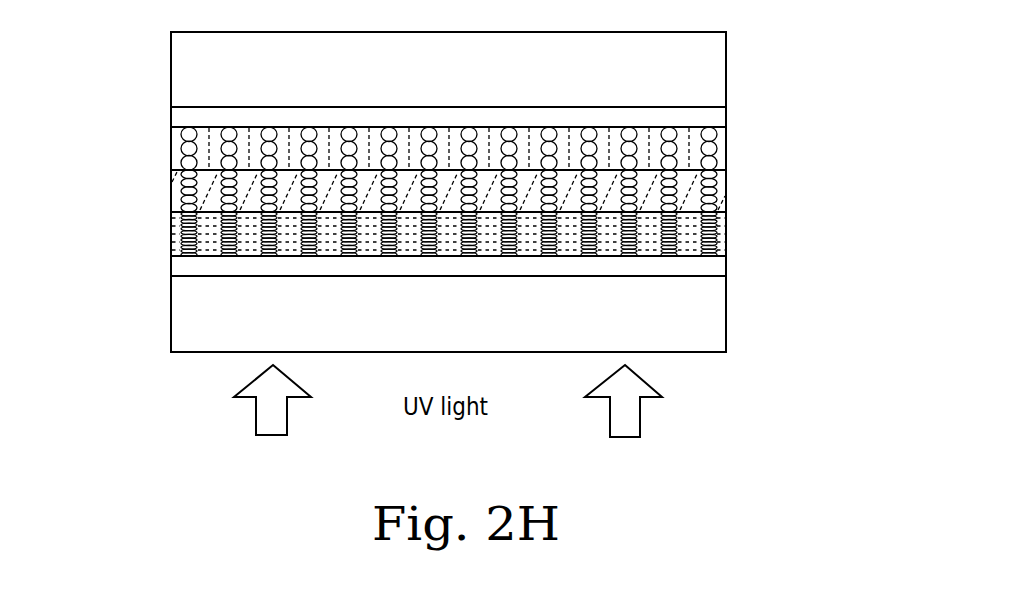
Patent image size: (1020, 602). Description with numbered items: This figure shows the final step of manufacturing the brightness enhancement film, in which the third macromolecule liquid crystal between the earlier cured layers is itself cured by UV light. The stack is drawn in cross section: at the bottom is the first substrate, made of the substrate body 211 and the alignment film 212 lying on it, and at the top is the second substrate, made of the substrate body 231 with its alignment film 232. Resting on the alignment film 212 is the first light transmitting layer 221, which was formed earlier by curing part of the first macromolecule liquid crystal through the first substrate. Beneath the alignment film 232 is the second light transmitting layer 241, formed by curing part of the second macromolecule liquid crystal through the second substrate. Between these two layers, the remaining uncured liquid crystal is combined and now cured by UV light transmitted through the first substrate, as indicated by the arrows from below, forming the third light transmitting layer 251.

The substrate body 231 is at (710, 71).
The alignment film 232 is at (710, 121).
The second light transmitting layer 241 is at (710, 157).
The third light transmitting layer 251 is at (710, 204).
The first light transmitting layer 221 is at (710, 232).
The alignment film 212 is at (710, 270).
The substrate body 211 is at (708, 328).